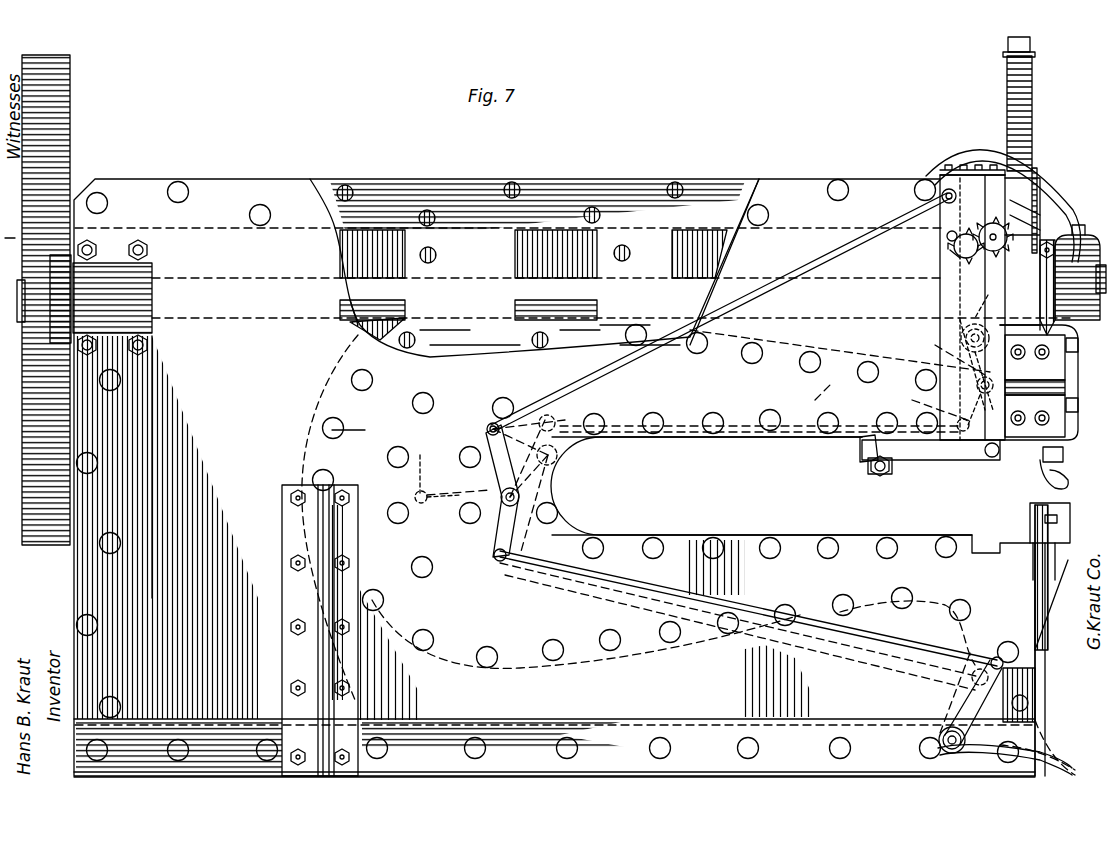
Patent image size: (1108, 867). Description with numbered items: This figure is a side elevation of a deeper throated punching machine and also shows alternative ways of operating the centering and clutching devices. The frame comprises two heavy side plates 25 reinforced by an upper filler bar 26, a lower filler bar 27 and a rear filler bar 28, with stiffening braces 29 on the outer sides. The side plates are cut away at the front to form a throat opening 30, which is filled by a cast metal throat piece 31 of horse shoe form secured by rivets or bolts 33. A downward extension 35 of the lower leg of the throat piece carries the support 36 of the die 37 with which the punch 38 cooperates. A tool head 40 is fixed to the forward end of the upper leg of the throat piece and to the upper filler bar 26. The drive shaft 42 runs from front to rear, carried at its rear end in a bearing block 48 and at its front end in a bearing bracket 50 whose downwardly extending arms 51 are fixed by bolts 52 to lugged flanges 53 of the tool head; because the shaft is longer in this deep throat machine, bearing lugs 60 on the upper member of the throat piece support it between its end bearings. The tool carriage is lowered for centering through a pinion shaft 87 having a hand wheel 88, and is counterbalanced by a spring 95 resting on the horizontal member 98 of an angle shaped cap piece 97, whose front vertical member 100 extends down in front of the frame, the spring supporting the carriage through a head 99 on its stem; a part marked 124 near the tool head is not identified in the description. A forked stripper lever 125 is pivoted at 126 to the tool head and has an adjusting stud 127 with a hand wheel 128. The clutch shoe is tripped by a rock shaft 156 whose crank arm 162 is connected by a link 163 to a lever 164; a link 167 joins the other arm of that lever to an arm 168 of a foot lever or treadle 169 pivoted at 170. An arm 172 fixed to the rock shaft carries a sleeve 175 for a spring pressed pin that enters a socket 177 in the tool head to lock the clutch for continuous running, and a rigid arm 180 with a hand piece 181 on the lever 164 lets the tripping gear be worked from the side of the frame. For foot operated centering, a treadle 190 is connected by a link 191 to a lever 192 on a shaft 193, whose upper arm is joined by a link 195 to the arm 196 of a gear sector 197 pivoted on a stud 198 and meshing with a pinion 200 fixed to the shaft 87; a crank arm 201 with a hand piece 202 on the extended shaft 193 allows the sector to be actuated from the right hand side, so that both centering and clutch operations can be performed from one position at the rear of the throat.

The side plates 25 is at (574, 477).
The upper filler bar 26 is at (622, 180).
The lower filler bar 27 is at (200, 740).
The rear filler bar 28 is at (88, 577).
The stiffening braces 29 is at (320, 605).
The throat opening 30 is at (761, 486).
The throat piece 31 is at (365, 333).
The rivets or bolts 33 is at (413, 403).
The downward extension 35 is at (1035, 680).
The die support 36 is at (1064, 640).
The die 37 is at (1032, 518).
The punch 38 is at (1066, 470).
The tool head 40 is at (938, 286).
The drive shaft 42 is at (700, 292).
The bearing block 48 is at (148, 286).
The bearing bracket 50 is at (1082, 268).
The downwardly extending arms 51 is at (1068, 446).
The bolts 52 is at (1072, 350).
The lugged flanges 53 is at (1078, 405).
The bearing lugs 60 is at (533, 275).
The centering pinion shaft 87 is at (990, 225).
The hand wheel 88 is at (1045, 176).
The spring 95 is at (1030, 112).
The cap piece 97 is at (995, 162).
The horizontal member 98 is at (1036, 165).
The head 99 is at (1030, 46).
The front vertical member 100 is at (1045, 190).
The plunger 124 is at (1042, 290).
The stripper lever 125 is at (958, 458).
The pivot 126 is at (992, 458).
The adjusting stud 127 is at (862, 442).
The hand wheel 128 is at (868, 470).
The rock shaft 156 is at (935, 347).
The crank arm 162 is at (912, 398).
The link 163 is at (816, 389).
The lever 164 is at (540, 468).
The link 167 is at (560, 598).
The arm 168 is at (965, 685).
The foot lever or treadle 169 is at (1040, 705).
The pivot 170 is at (938, 742).
The upwardly extending arm 172 is at (966, 367).
The sleeve 175 is at (986, 297).
The socket 177 is at (1012, 319).
The rigid arm 180 is at (455, 492).
The hand piece 181 is at (452, 468).
The foot lever or treadle 190 is at (1022, 745).
The link 191 is at (755, 605).
The lever 192 is at (512, 530).
The shaft 193 is at (505, 500).
The link 195 is at (721, 312).
The arm 196 is at (955, 208).
The gear sector 197 is at (955, 248).
The stud 198 is at (947, 237).
The pinion 200 is at (971, 254).
The crank arm 201 is at (560, 455).
The hand piece 202 is at (555, 418).